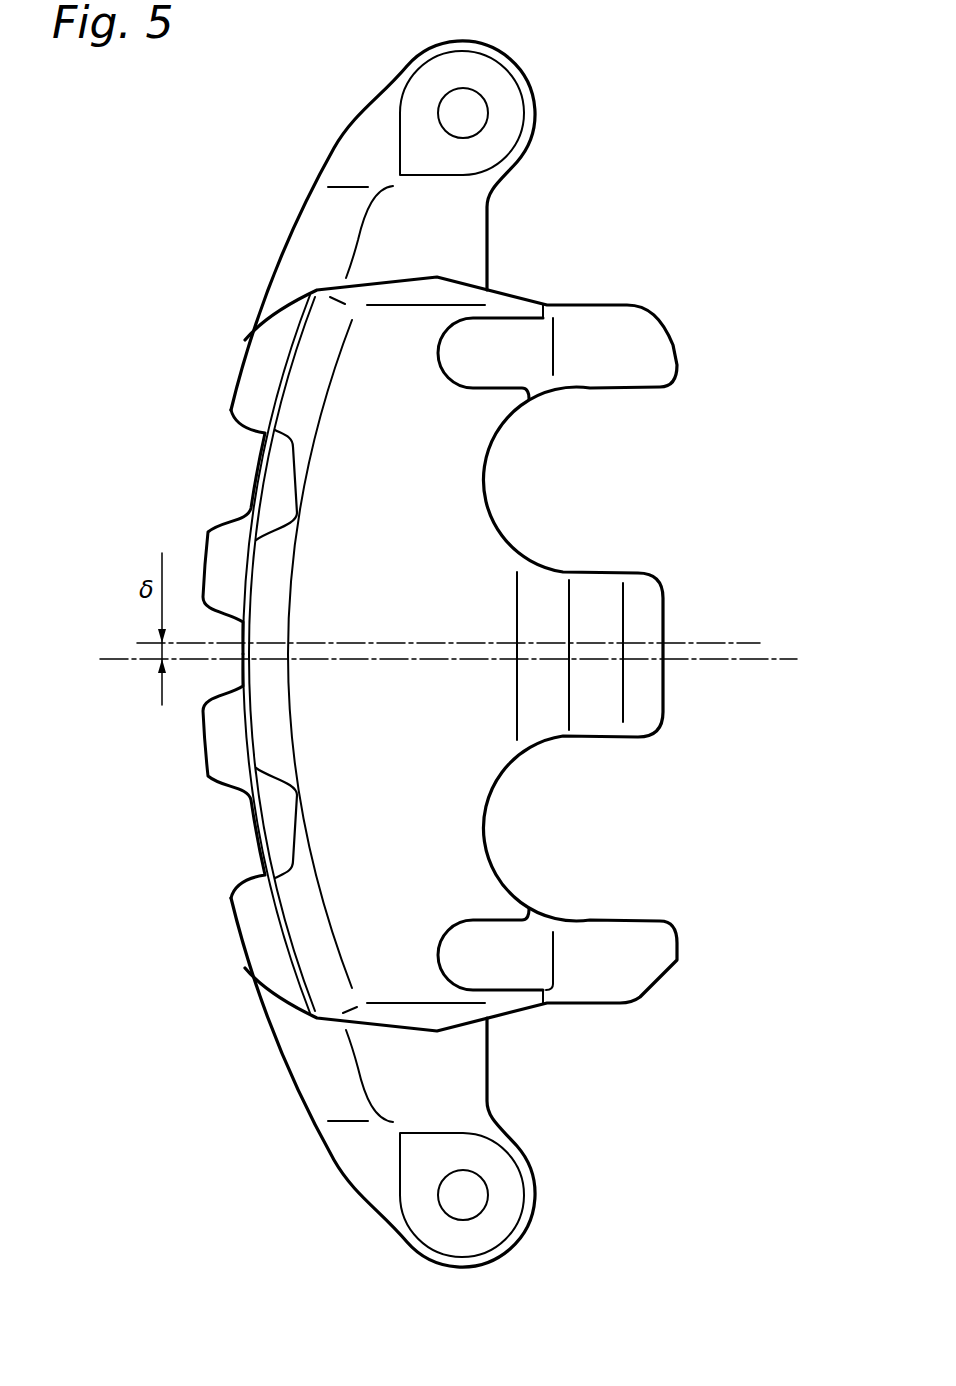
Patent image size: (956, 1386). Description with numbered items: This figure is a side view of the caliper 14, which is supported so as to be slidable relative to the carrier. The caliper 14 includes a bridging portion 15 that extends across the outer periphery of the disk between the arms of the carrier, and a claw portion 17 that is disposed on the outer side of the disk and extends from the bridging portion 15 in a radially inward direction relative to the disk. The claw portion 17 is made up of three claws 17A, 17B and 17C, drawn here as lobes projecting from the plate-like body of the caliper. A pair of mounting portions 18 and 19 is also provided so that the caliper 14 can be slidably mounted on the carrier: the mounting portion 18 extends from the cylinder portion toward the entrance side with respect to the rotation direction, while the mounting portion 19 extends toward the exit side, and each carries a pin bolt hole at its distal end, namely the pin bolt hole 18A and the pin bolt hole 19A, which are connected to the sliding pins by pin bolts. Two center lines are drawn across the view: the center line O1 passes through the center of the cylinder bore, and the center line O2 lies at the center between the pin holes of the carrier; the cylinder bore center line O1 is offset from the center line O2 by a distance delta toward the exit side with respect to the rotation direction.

The caliper 14 is at (239, 359).
The bridging portion 15 is at (233, 472).
The claw portion 17 is at (347, 800).
The claw 17A is at (632, 368).
The claw 17B is at (640, 602).
The claw 17C is at (645, 953).
The mounting portion 18 is at (350, 162).
The pin bolt hole 18A is at (463, 113).
The mounting portion 19 is at (355, 1145).
The pin bolt hole 19A is at (465, 1193).
The center line of the cylinder bore O1 is at (452, 658).
The center line between the pin holes O2 is at (449, 639).